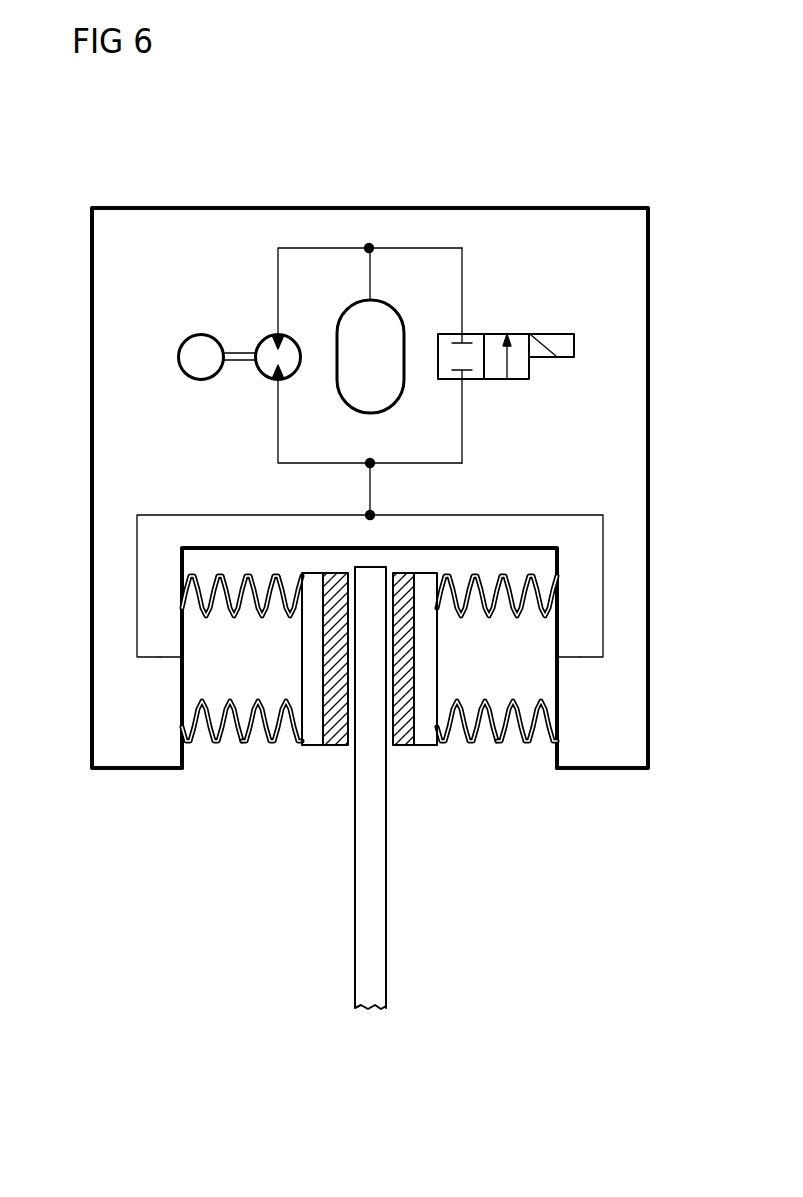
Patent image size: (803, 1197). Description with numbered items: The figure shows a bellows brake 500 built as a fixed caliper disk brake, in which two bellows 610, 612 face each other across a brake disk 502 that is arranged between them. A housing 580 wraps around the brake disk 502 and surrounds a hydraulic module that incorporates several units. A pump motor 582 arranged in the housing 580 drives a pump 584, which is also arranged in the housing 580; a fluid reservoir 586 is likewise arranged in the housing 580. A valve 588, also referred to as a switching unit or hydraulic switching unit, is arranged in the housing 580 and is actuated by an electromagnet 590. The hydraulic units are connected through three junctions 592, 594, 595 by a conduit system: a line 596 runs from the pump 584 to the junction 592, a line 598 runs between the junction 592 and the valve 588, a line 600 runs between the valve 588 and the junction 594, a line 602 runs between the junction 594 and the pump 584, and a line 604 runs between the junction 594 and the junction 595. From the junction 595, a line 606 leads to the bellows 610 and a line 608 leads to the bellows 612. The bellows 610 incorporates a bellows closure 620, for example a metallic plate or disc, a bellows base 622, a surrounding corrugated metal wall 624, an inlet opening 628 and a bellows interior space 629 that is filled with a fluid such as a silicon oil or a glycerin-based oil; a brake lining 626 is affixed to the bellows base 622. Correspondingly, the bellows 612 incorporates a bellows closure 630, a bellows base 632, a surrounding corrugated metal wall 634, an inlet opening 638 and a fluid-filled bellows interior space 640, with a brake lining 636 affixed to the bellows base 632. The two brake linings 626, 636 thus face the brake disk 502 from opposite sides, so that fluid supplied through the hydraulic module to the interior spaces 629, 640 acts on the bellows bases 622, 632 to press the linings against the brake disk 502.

The bellows brake 500 is at (72, 277).
The brake disk 502 is at (386, 940).
The housing 580 is at (648, 515).
The pump motor 582 is at (192, 336).
The pump 584 is at (268, 336).
The fluid reservoir 586 is at (347, 318).
The valve 588 is at (494, 333).
The electromagnet 590 is at (560, 333).
The junction 592 is at (370, 249).
The junction 594 is at (372, 461).
The junction 595 is at (372, 513).
The line 596 is at (278, 262).
The line 598 is at (462, 265).
The line 600 is at (462, 435).
The line 602 is at (278, 438).
The line 604 is at (370, 490).
The line 606 is at (147, 660).
The line 608 is at (603, 660).
The bellows 610 is at (240, 782).
The bellows 612 is at (498, 782).
The bellows closure 620 is at (182, 693).
The bellows base 622 is at (302, 665).
The corrugated metal wall 624 is at (205, 735).
The brake lining 626 is at (338, 747).
The inlet opening 628 is at (182, 659).
The bellows interior space 629 is at (265, 735).
The bellows closure 630 is at (557, 690).
The bellows base 632 is at (437, 665).
The corrugated metal wall 634 is at (535, 747).
The brake lining 636 is at (405, 745).
The inlet opening 638 is at (557, 659).
The bellows interior space 640 is at (477, 745).